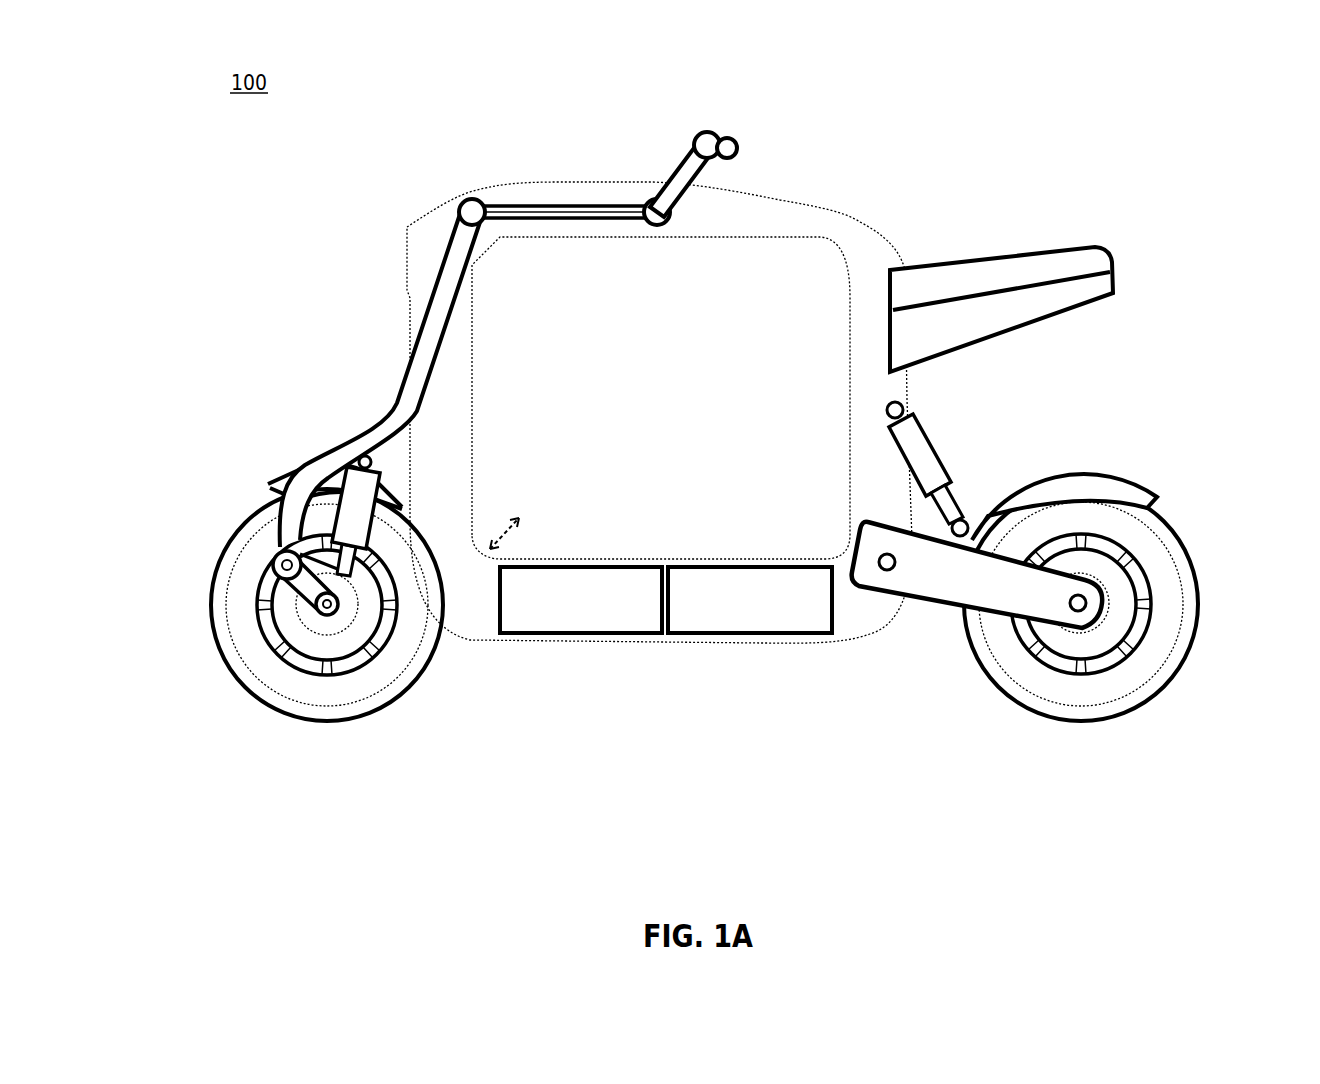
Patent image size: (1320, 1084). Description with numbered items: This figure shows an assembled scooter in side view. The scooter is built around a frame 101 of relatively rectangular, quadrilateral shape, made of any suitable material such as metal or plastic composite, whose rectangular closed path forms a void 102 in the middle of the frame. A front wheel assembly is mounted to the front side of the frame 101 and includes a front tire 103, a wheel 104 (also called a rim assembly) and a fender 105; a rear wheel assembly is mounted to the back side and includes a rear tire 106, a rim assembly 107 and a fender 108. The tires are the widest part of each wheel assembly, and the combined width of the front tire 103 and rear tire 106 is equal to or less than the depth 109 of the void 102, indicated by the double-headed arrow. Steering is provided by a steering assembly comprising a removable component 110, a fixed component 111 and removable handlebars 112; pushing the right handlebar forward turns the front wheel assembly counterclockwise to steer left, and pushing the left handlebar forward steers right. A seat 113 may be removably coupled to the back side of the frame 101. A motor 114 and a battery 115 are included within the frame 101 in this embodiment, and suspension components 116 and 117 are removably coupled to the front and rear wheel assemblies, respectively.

The frame 101 is at (860, 221).
The void 102 is at (571, 350).
The tire 103 is at (340, 688).
The wheel 104 is at (380, 650).
The fender 105 is at (283, 480).
The tire 106 is at (1165, 572).
The rim assembly 107 is at (1115, 637).
The fender 108 is at (1117, 478).
The depth 109 is at (545, 533).
The removable component 110 is at (395, 410).
The fixed component 111 is at (527, 203).
The removable handlebars 112 is at (742, 148).
The seat 113 is at (1035, 300).
The motor 114 is at (572, 612).
The battery 115 is at (778, 612).
The suspension component 116 is at (355, 508).
The suspension component 117 is at (932, 482).